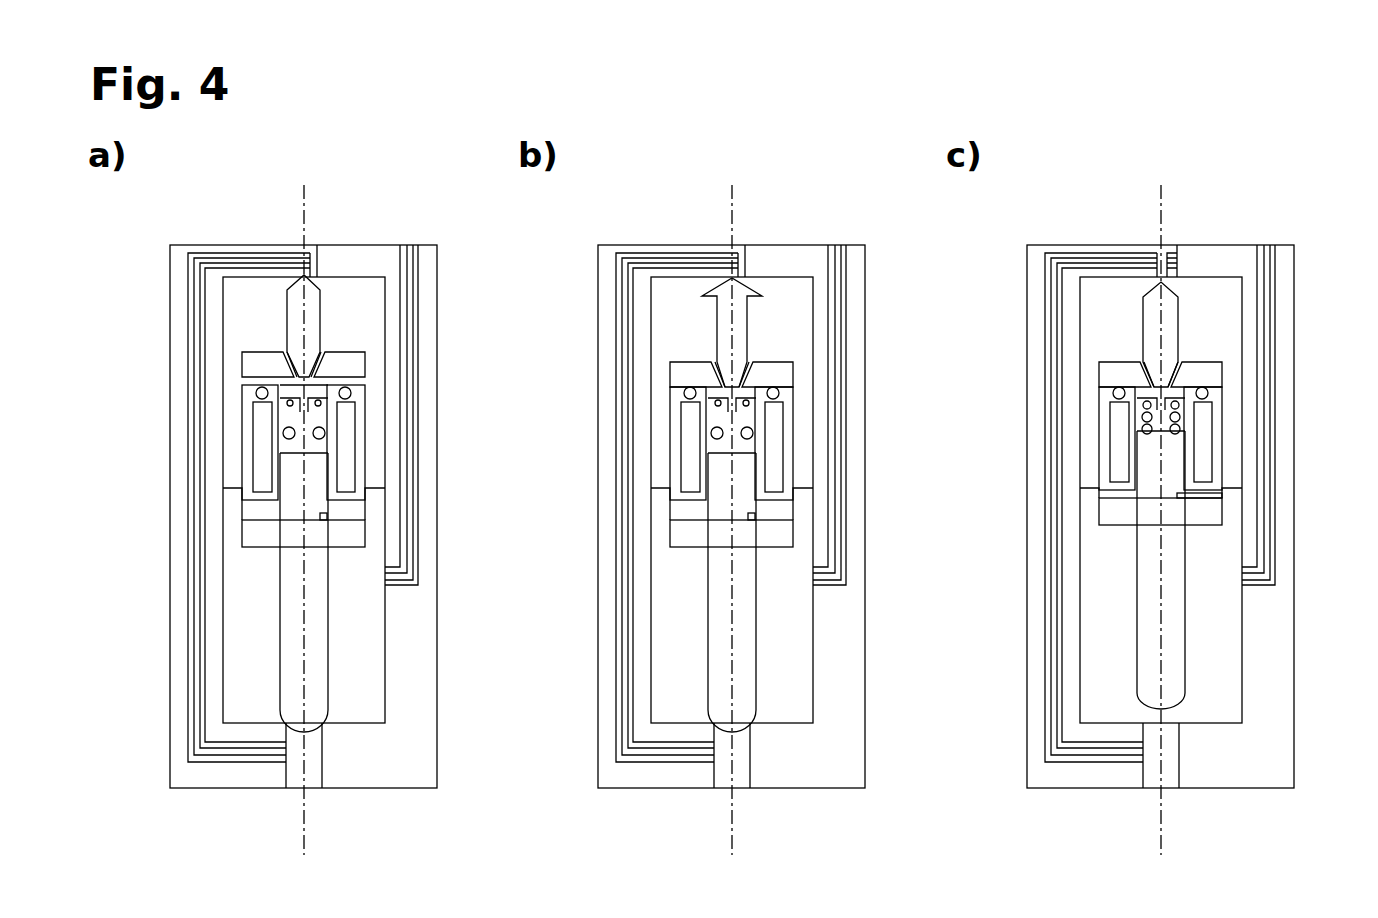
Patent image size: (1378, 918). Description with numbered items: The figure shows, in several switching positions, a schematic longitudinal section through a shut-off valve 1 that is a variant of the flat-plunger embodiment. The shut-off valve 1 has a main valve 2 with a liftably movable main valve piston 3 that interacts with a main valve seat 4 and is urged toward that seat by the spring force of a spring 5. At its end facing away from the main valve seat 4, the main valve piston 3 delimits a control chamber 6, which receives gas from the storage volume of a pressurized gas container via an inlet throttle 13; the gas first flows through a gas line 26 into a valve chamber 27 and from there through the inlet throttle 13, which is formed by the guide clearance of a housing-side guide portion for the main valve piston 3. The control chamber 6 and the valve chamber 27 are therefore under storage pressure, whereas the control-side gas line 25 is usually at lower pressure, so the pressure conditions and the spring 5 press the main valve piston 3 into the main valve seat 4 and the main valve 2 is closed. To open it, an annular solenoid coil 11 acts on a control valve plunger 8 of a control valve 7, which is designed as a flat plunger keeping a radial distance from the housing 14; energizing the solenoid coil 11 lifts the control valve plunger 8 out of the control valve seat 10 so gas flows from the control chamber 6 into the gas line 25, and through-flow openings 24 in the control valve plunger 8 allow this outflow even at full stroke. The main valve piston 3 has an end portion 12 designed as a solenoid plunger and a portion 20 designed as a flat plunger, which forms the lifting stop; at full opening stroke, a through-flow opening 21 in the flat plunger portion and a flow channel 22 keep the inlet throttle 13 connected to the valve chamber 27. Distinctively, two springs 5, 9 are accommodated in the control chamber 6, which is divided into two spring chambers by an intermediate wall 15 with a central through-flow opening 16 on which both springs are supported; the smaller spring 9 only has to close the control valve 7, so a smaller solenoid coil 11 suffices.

The shut-off valve 1 is at (303, 516).
The main valve 2 is at (254, 697).
The main valve piston 3 is at (295, 608).
The main valve seat 4 is at (300, 718).
The spring 5 is at (262, 432).
The control chamber 6 is at (258, 408).
The control valve 7 is at (250, 311).
The control valve plunger 8 is at (311, 291).
The spring 9 is at (320, 396).
The control valve seat 10 is at (300, 278).
The solenoid coil 11 is at (262, 470).
The end portion 12 is at (278, 490).
The inlet throttle 13 is at (1190, 475).
The housing 14 is at (376, 256).
The intermediate wall 15 is at (320, 422).
The central through-flow opening 16 is at (287, 392).
The portion designed as a flat plunger 20 is at (280, 531).
The through-flow opening 21 is at (283, 512).
The flow channel 22 is at (327, 516).
The through-flow openings 24 is at (345, 368).
The gas line 25 is at (218, 258).
The gas line 26 is at (405, 268).
The valve chamber 27 is at (1113, 640).